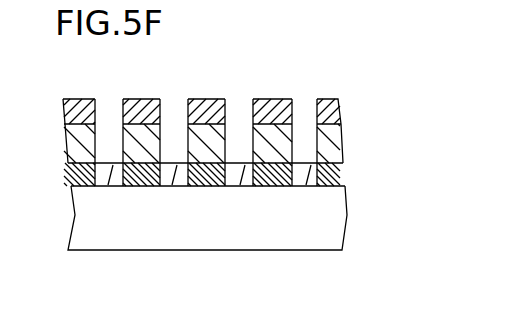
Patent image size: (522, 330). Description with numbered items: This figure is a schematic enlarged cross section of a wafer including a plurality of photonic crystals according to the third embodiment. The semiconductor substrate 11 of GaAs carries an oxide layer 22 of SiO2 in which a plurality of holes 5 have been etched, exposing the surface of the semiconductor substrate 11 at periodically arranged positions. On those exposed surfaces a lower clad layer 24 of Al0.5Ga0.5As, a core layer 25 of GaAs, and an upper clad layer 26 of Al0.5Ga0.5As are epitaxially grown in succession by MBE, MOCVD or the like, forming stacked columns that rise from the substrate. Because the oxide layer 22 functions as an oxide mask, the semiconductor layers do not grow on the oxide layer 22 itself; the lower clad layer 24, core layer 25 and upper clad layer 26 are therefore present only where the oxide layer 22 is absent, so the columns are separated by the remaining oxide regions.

The holes 5 is at (307, 153).
The semiconductor substrate 11 is at (338, 218).
The oxide layer 22 is at (295, 176).
The lower clad layer 24 is at (333, 178).
The core layer 25 is at (332, 143).
The upper clad layer 26 is at (335, 117).